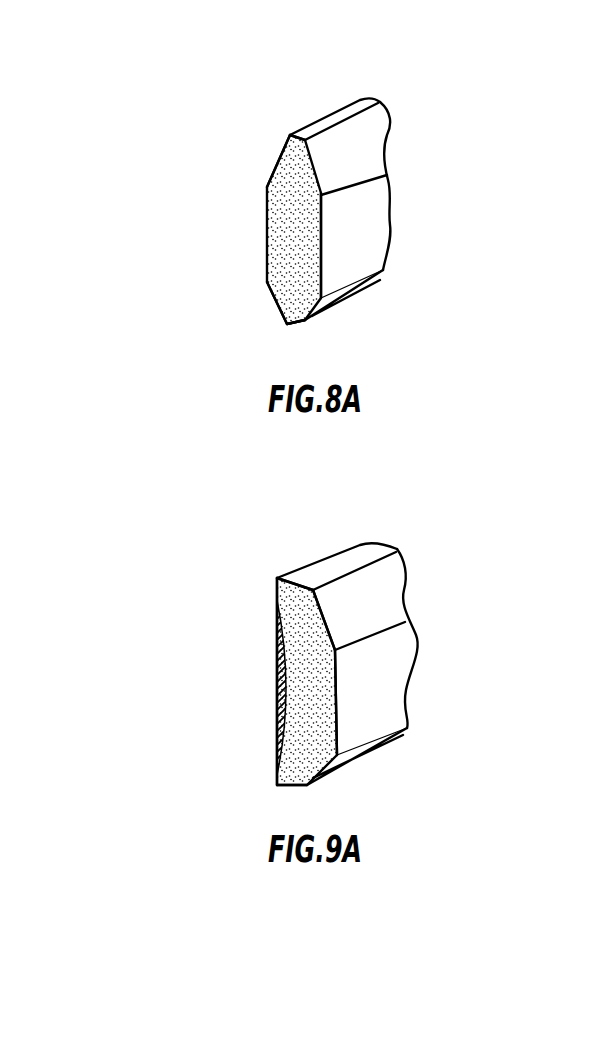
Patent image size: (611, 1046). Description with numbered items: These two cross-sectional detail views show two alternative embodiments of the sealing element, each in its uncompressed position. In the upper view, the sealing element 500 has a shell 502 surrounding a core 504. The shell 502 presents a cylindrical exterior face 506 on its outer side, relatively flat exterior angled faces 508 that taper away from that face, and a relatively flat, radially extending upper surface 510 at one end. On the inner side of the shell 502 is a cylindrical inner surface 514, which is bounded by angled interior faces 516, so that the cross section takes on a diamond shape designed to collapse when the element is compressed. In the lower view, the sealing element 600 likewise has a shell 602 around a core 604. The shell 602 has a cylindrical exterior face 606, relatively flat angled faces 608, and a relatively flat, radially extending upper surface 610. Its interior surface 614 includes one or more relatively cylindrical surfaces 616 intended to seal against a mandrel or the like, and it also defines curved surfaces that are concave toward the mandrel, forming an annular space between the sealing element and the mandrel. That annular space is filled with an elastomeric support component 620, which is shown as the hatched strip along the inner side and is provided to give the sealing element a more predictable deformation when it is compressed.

In FIG. 8A, the sealing element 500 is at (335, 204).
In FIG. 8A, the shell 502 is at (370, 192).
In FIG. 8A, the core 504 is at (323, 237).
In FIG. 8A, the cylindrical exterior face 506 is at (372, 258).
In FIG. 8A, the exterior angled faces 508 is at (357, 140).
In FIG. 8A, the upper surface 510 is at (360, 100).
In FIG. 8A, the cylindrical inner surface 514 is at (267, 215).
In FIG. 8A, the angled interior faces 516 is at (273, 172).
In FIG. 9A, the sealing element 600 is at (350, 659).
In FIG. 9A, the shell 602 is at (387, 640).
In FIG. 9A, the core 604 is at (328, 718).
In FIG. 9A, the cylindrical exterior face 606 is at (380, 678).
In FIG. 9A, the angled faces 608 is at (385, 588).
In FIG. 9A, the upper surface 610 is at (360, 545).
In FIG. 9A, the interior surface 614 is at (297, 622).
In FIG. 9A, the cylindrical surfaces 616 is at (277, 592).
In FIG. 9A, the elastomeric support component 620 is at (278, 658).